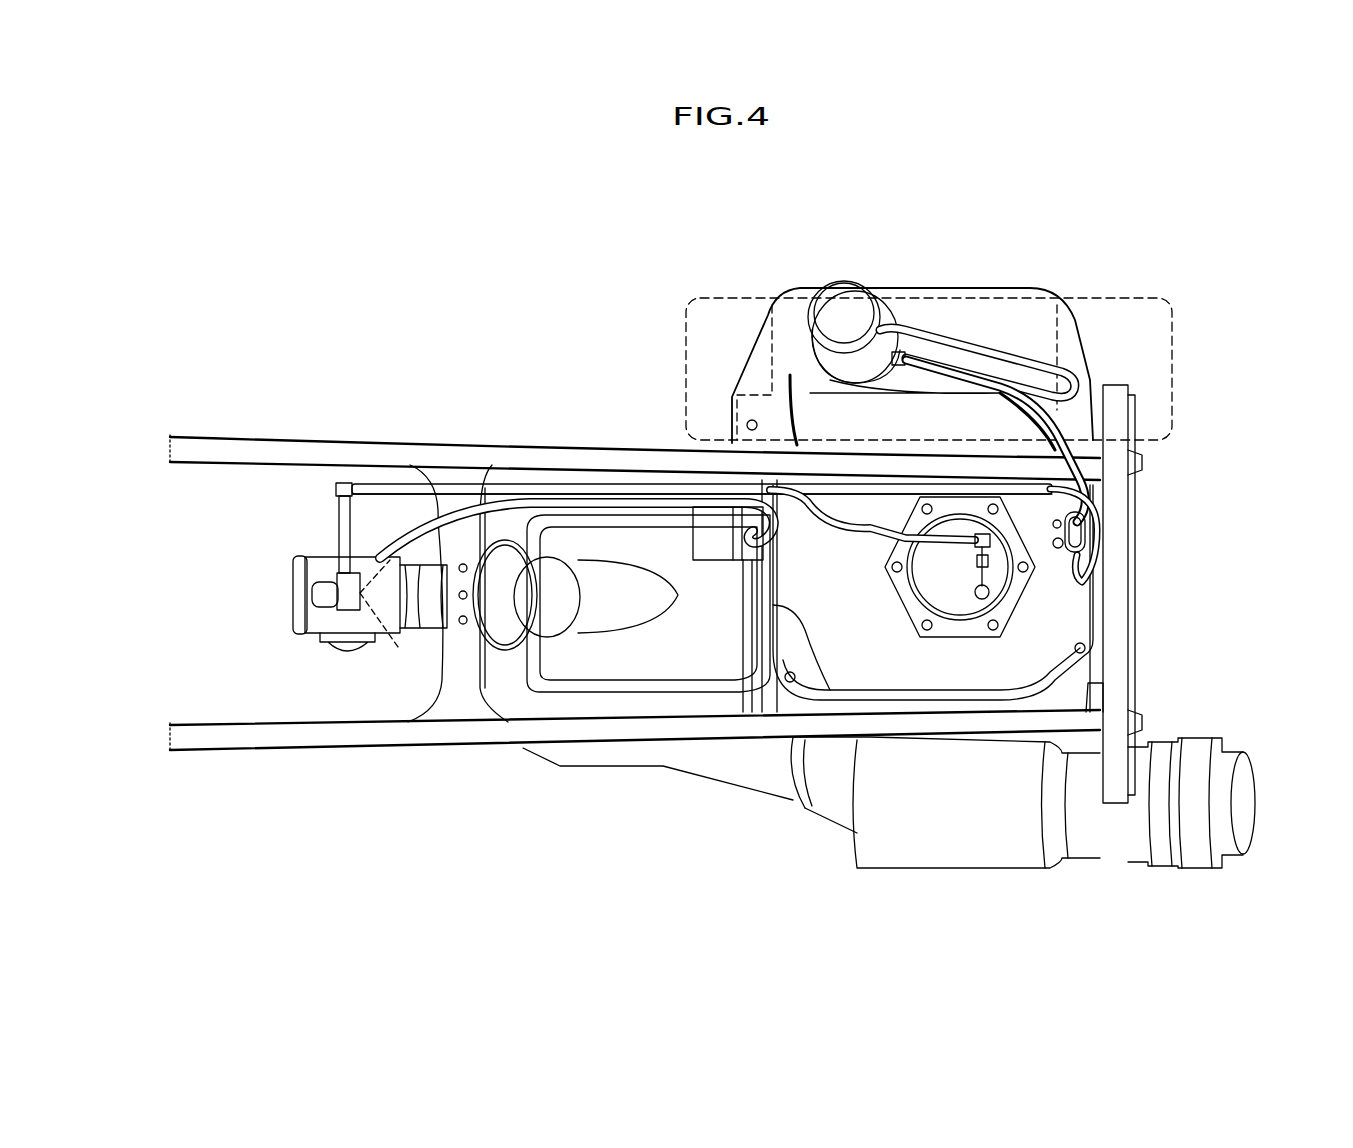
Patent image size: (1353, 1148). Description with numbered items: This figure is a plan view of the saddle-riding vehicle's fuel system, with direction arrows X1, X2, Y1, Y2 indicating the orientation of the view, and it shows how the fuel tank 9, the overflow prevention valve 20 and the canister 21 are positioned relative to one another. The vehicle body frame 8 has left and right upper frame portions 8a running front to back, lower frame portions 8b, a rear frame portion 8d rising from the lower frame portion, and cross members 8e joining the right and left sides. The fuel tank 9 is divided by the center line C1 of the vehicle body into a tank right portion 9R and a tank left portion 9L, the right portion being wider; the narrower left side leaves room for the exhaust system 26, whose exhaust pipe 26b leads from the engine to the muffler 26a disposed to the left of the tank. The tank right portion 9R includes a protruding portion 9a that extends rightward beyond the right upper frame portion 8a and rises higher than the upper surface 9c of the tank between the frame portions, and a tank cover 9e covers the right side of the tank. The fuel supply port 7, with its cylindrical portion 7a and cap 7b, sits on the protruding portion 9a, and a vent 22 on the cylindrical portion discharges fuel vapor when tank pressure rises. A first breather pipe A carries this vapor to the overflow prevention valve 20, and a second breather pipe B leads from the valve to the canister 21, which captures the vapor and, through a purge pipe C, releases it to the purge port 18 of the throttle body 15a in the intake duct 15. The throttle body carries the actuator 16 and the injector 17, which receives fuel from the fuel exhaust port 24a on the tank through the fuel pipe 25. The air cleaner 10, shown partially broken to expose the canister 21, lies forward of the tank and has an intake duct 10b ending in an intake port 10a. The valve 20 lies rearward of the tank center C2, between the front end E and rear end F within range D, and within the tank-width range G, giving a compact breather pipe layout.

The fuel supply port 7 is at (906, 374).
The cylindrical portion 7a is at (853, 372).
The cap 7b is at (846, 298).
The vehicle body frame 8 is at (617, 608).
The upper frame portion 8a is at (236, 437).
The lower frame portion 8b is at (798, 808).
The rear frame portion 8d is at (1098, 692).
The cross member 8e is at (455, 718).
The fuel tank 9 is at (933, 705).
The protruding portion 9a is at (690, 290).
The upper surface 9c is at (905, 687).
The tank cover 9e is at (968, 290).
The tank right portion 9R is at (1165, 302).
The tank left portion 9L is at (1165, 581).
The air cleaner 10 is at (614, 666).
The intake port 10a is at (505, 652).
The intake duct 10b is at (565, 618).
The intake duct 15 is at (336, 592).
The throttle body 15a is at (333, 556).
The actuator 16 is at (352, 652).
The injector 17 is at (316, 595).
The purge port 18 is at (395, 637).
The overflow prevention valve 20 is at (1085, 530).
The canister 21 is at (757, 545).
The vent 22 is at (899, 366).
The fuel exhaust port 24a is at (978, 600).
The fuel pipe 25 is at (845, 522).
The exhaust system 26 is at (889, 829).
The muffler 26a is at (1027, 848).
The exhaust pipe 26b is at (686, 766).
The first breather pipe A is at (1000, 352).
The second breather pipe B is at (1010, 488).
The purge pipe C is at (652, 508).
The center line C1 is at (1100, 595).
The center of the fuel tank C2 is at (913, 655).
The range D is at (1095, 222).
The front end of the fuel tank E is at (730, 440).
The rear end of the fuel tank F is at (1096, 420).
The range G is at (1000, 682).
The direction X1 is at (220, 195).
The direction X2 is at (220, 195).
The direction Y1 is at (220, 195).
The direction Y2 is at (220, 195).